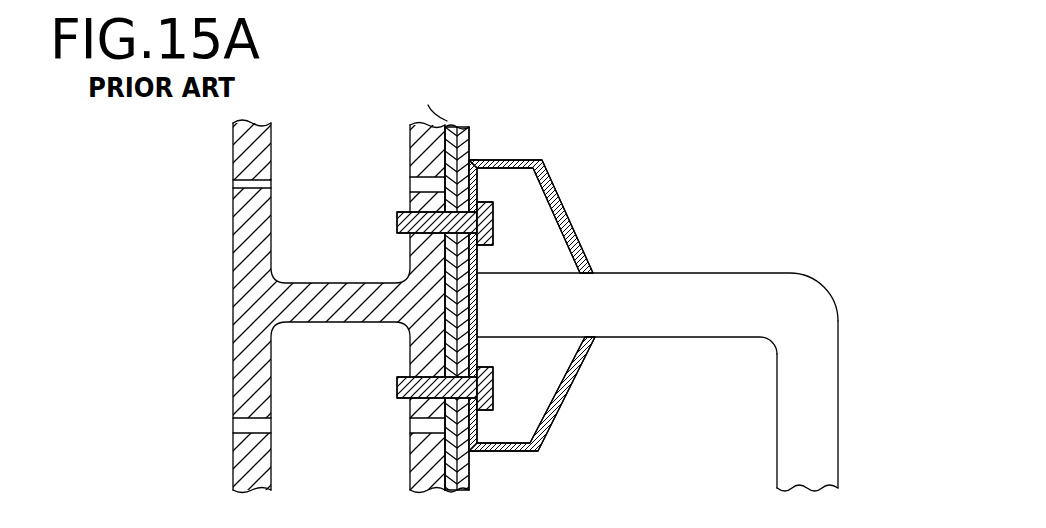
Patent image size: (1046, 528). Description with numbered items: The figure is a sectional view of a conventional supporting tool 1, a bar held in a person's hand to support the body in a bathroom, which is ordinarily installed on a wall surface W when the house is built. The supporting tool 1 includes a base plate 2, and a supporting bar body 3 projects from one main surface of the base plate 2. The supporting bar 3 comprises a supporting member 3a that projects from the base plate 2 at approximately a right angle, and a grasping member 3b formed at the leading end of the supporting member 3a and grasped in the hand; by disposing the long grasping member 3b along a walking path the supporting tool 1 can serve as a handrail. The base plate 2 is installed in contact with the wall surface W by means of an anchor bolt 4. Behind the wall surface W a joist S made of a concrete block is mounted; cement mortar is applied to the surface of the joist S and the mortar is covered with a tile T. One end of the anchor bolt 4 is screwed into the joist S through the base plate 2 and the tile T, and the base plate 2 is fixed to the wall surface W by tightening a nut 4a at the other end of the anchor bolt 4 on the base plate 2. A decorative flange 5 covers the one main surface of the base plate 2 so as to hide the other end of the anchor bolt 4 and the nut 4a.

The supporting tool 1 is at (797, 80).
The base plate 2 is at (479, 260).
The supporting bar body 3 is at (700, 349).
The supporting member 3a is at (706, 292).
The grasping member 3b is at (815, 450).
The anchor bolt 4 is at (398, 221).
The nut 4a is at (490, 198).
The decorative flange 5 is at (572, 215).
The joist S is at (423, 205).
The wall surface W is at (487, 137).
The tile T is at (468, 155).